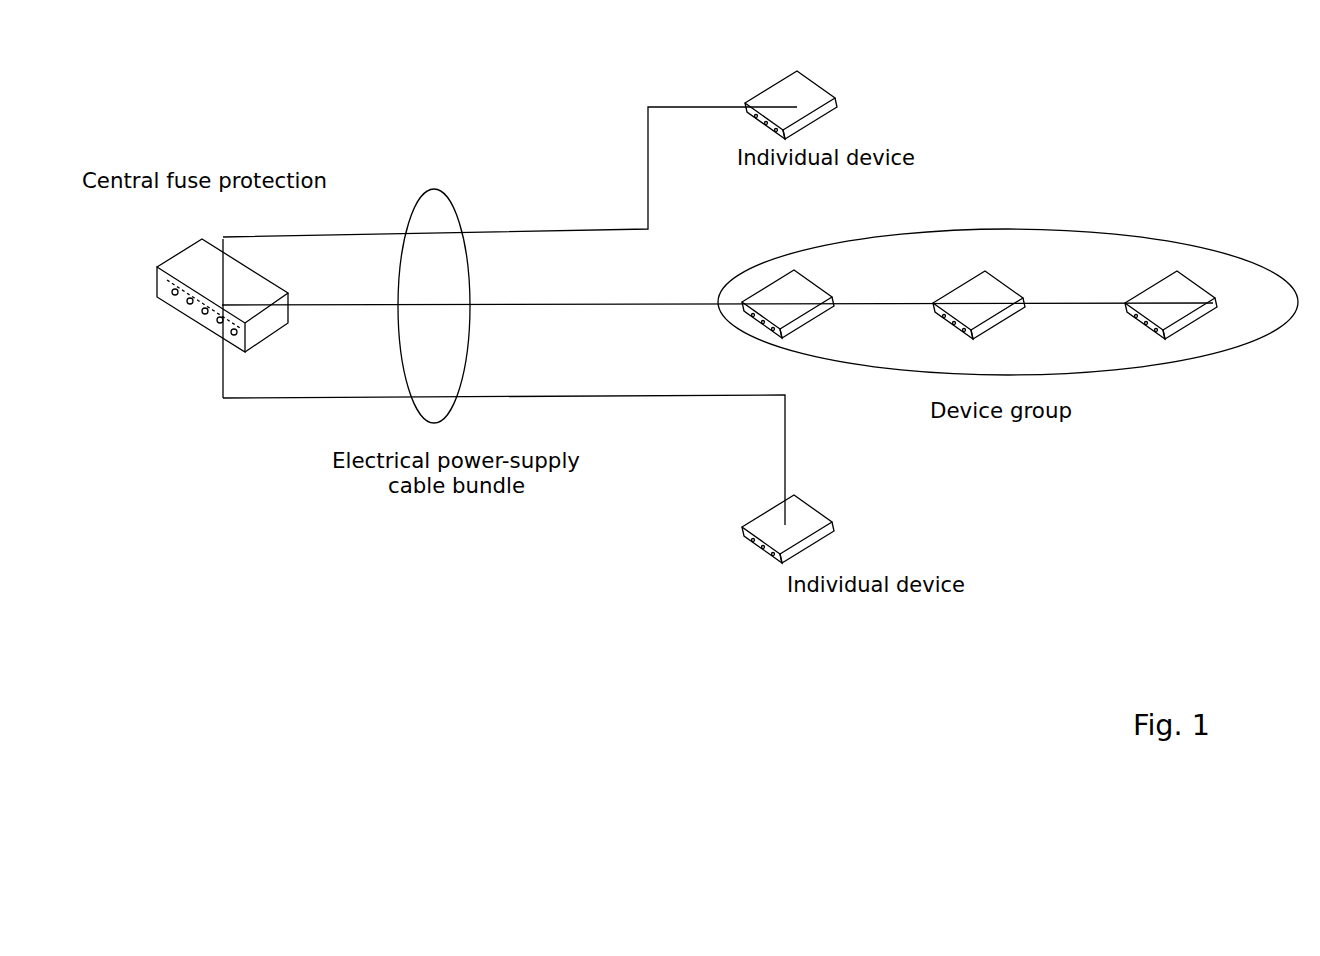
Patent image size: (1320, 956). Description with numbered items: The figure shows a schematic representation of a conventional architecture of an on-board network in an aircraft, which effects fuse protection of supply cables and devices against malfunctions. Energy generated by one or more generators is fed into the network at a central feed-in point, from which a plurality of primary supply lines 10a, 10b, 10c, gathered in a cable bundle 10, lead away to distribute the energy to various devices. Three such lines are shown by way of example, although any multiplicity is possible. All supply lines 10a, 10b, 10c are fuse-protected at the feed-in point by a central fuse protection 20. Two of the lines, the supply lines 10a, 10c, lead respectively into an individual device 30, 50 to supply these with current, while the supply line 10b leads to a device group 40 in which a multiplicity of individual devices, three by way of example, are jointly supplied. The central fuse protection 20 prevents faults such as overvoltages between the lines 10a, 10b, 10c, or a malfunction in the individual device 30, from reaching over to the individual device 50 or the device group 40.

The cable bundle 10 is at (430, 190).
The supply line 10a is at (547, 228).
The supply line 10b is at (578, 307).
The supply line 10c is at (655, 400).
The central fuse protection 20 is at (193, 330).
The individual device 30 is at (767, 85).
The device group 40 is at (1012, 228).
The individual device 50 is at (750, 552).